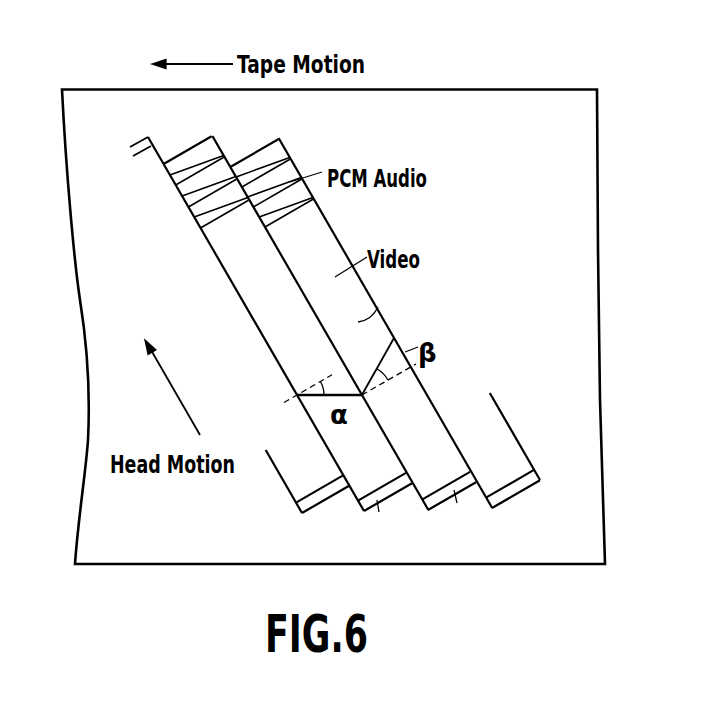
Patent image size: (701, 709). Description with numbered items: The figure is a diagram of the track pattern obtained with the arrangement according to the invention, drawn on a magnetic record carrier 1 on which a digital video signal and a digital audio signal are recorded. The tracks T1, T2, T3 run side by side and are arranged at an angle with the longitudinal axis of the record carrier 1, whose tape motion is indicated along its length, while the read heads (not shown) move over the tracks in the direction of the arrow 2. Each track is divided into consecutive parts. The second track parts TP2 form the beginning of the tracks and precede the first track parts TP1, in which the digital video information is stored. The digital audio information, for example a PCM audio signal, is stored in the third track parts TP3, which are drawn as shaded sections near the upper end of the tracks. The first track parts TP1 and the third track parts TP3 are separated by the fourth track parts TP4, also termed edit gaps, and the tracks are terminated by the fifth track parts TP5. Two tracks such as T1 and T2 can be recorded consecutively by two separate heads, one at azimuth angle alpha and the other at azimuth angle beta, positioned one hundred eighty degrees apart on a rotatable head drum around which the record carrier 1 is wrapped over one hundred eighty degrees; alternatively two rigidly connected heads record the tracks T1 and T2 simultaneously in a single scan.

The magnetic record carrier 1 is at (507, 89).
The arrow 2 is at (185, 376).
The track T1 is at (346, 453).
The track T2 is at (440, 440).
The track T3 is at (507, 432).
The first track part TP1 is at (256, 297).
The second track part TP2 is at (332, 492).
The third track part TP3 is at (190, 195).
The fourth track part TP4 is at (204, 226).
The fifth track part TP5 is at (190, 148).